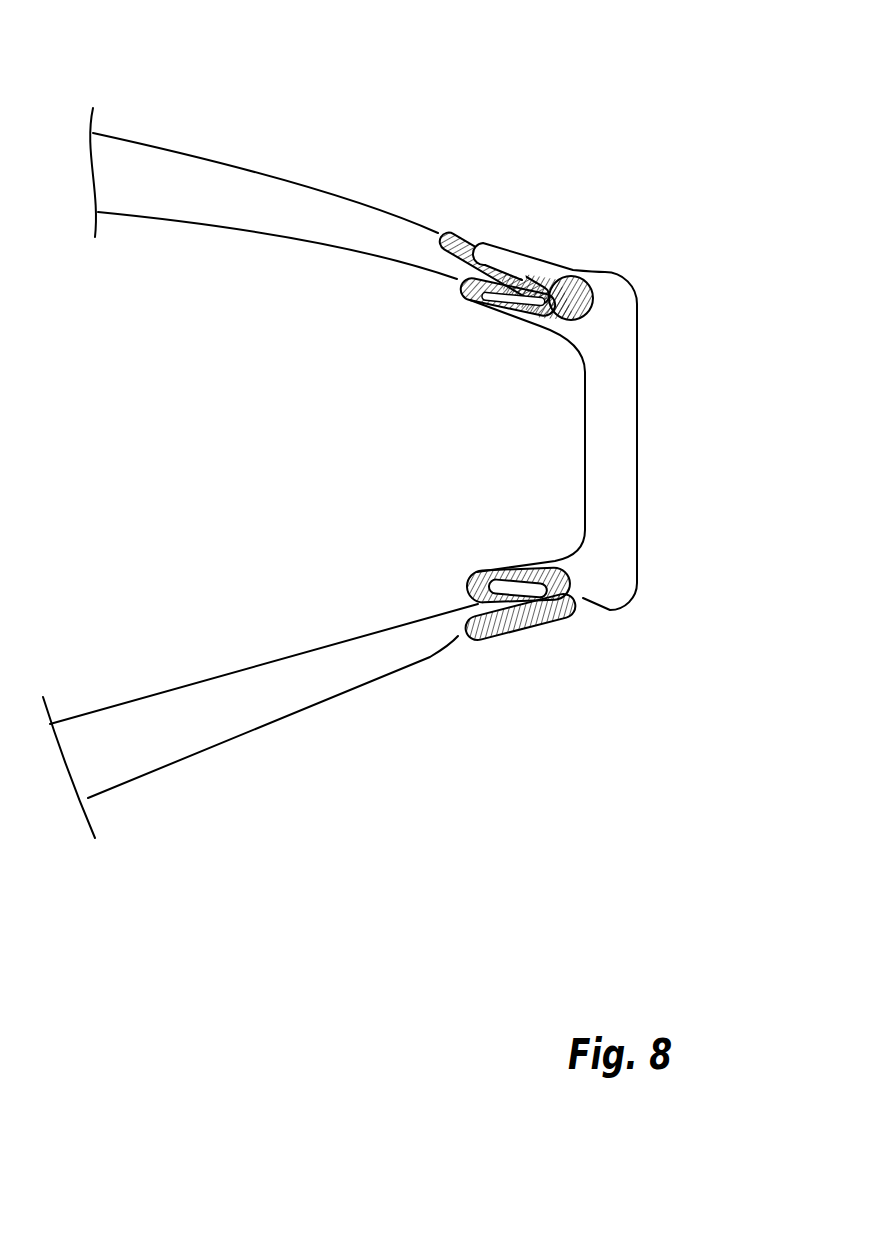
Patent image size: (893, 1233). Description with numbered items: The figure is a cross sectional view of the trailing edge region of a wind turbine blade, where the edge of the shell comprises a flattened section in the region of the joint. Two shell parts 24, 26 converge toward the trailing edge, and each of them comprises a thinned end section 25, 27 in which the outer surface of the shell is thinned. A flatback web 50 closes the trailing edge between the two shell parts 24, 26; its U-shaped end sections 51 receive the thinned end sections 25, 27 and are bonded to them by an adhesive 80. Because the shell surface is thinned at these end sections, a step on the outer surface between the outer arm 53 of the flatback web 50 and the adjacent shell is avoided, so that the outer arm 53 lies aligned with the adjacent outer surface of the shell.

The shell part 24 is at (240, 193).
The thinned end section 25 is at (510, 280).
The shell part 26 is at (210, 708).
The thinned end section 27 is at (510, 600).
The flatback web 50 is at (637, 413).
The U-shaped end section 51 is at (497, 310).
The outer arm 53 is at (503, 252).
The adhesive 80 is at (553, 283).